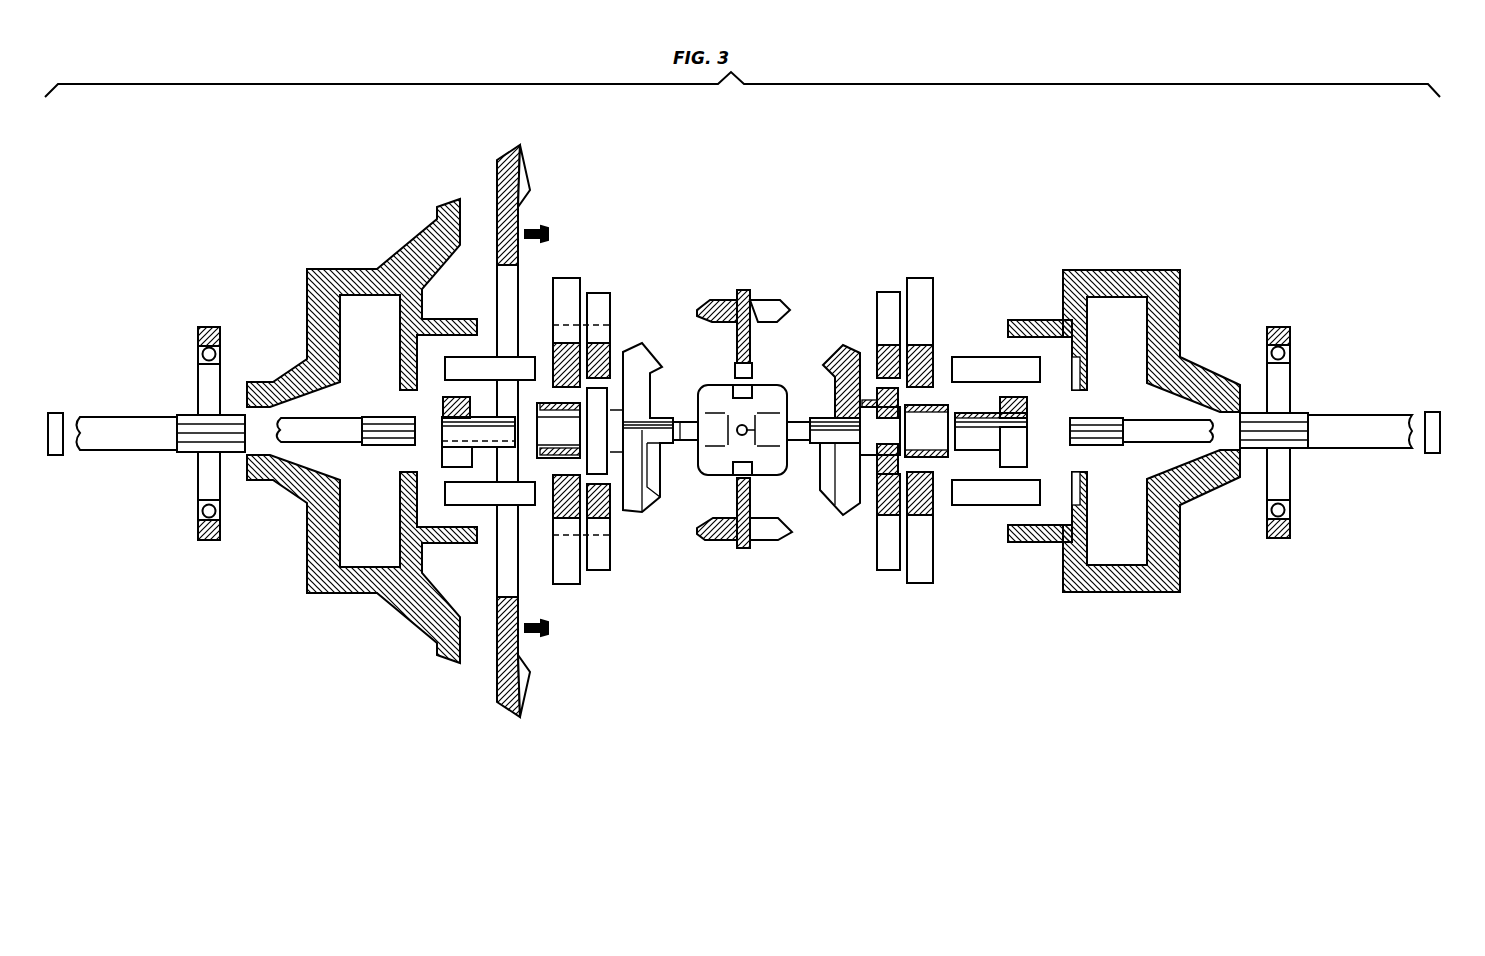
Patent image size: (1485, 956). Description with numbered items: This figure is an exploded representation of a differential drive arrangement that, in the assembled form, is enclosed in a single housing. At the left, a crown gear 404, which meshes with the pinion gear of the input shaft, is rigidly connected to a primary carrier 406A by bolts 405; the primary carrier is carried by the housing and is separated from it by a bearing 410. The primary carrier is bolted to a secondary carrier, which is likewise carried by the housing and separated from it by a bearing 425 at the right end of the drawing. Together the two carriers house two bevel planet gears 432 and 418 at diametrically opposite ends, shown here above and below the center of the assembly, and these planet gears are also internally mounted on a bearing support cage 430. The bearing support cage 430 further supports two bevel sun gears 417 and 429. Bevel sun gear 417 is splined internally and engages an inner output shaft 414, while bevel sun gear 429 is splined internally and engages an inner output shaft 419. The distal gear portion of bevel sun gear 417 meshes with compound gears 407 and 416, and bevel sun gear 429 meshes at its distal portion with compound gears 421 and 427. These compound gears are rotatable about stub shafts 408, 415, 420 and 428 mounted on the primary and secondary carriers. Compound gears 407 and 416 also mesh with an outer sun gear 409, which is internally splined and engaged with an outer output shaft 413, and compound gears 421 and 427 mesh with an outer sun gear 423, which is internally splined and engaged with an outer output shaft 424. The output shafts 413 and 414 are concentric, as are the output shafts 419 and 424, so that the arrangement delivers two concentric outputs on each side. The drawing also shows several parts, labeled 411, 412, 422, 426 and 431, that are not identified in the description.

The crown gear 404 is at (499, 165).
The bolts 405 is at (540, 230).
The primary carrier 406A is at (420, 237).
The compound gear 407 is at (553, 355).
The stub shaft 408 is at (488, 355).
The outer sun gear 409 is at (442, 410).
The bearing 410 is at (205, 375).
The hub 411 is at (540, 457).
The end cap 412 is at (59, 408).
The outer output shaft 413 is at (120, 452).
The inner output shaft 414 is at (358, 443).
The stub shaft 415 is at (487, 508).
The compound gear 416 is at (597, 570).
The bevel sun gear 417 is at (642, 517).
The bevel planet gear 418 is at (769, 542).
The inner output shaft 419 is at (1150, 445).
The stub shaft 420 is at (993, 507).
The compound gear 421 is at (878, 530).
The collar 422 is at (933, 457).
The outer sun gear 423 is at (1030, 440).
The outer output shaft 424 is at (1348, 450).
The bearing 425 is at (1283, 370).
The end cap 426 is at (1430, 457).
The compound gear 427 is at (920, 278).
The stub shaft 428 is at (972, 357).
The bevel sun gear 429 is at (850, 348).
The bearing support cage 430 is at (783, 387).
The pin 431 is at (735, 376).
The bevel planet gear 432 is at (760, 300).